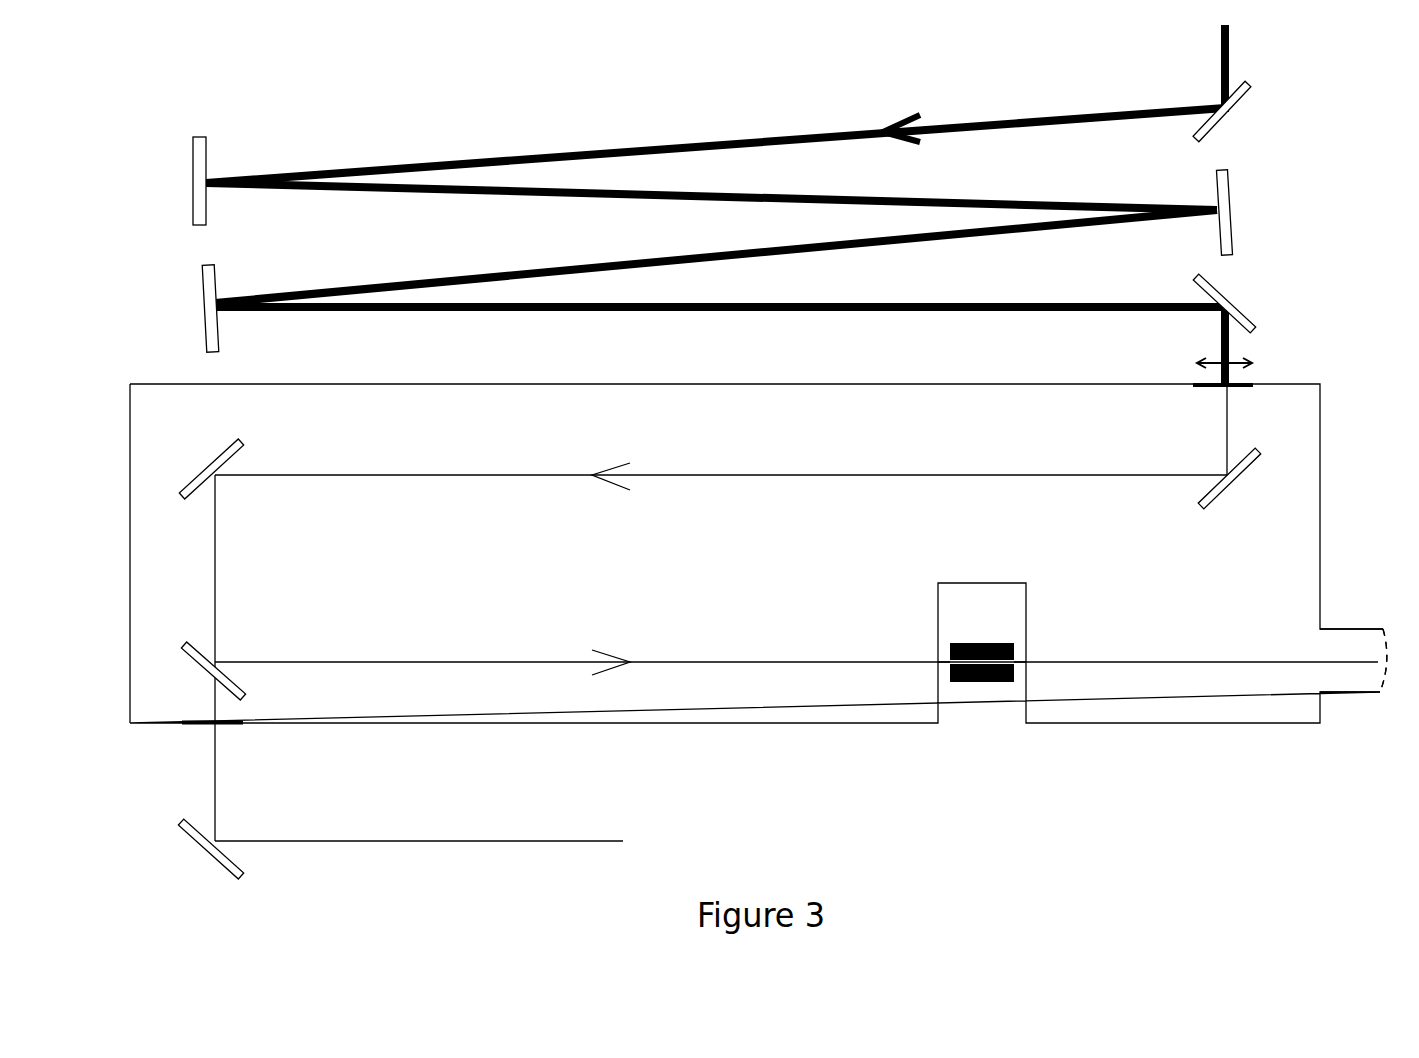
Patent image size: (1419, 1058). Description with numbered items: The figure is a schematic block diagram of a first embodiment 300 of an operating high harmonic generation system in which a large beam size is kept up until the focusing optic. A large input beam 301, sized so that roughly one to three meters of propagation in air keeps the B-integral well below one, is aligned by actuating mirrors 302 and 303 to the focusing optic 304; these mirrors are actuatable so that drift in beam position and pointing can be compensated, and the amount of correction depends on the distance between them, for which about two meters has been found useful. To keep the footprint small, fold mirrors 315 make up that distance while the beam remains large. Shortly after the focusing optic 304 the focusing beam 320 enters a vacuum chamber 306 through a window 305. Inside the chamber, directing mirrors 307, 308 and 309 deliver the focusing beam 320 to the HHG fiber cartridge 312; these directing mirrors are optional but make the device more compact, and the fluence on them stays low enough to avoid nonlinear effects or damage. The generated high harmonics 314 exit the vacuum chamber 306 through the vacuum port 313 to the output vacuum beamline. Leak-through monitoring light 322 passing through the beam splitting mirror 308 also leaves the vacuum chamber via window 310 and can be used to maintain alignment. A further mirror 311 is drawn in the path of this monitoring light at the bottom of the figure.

The first embodiment 300 is at (783, 44).
The input beam 301 is at (715, 104).
The actuating mirror 302 is at (1240, 111).
The actuating mirror 303 is at (1241, 330).
The focusing optic 304 is at (1254, 367).
The window 305 is at (1193, 405).
The vacuum chamber 306 is at (758, 574).
The directing mirror 307 is at (198, 639).
The beam splitting mirror 308 is at (194, 649).
The directing mirror 309 is at (1245, 482).
The window 310 is at (236, 743).
The mirror 311 is at (203, 855).
The HHG fiber cartridge 312 is at (982, 643).
The vacuum port 313 is at (1363, 643).
The high harmonics 314 is at (796, 653).
The fold mirrors 315 is at (717, 244).
The focusing beam 320 is at (721, 437).
The leak-through monitoring light 322 is at (419, 824).